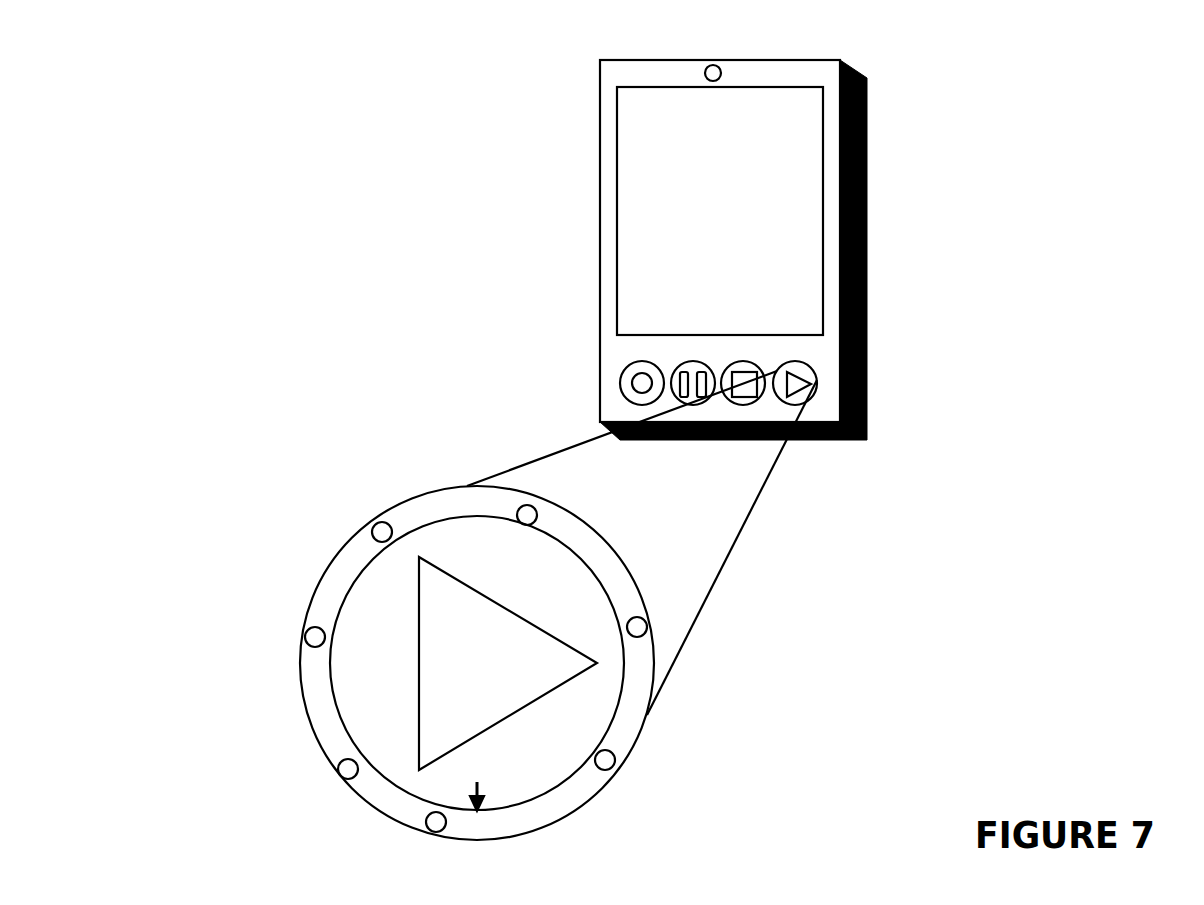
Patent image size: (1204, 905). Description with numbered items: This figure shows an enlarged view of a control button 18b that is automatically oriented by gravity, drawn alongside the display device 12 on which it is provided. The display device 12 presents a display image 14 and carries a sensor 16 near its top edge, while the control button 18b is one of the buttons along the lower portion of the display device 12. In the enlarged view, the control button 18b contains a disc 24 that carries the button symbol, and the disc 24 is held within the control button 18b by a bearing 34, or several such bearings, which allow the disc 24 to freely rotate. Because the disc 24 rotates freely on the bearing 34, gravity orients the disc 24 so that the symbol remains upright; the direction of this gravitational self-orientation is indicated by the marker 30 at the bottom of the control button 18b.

The display device 12 is at (600, 148).
The display image 14 is at (638, 270).
The sensor 16 is at (705, 72).
The control button 18b is at (818, 466).
The disc 24 is at (448, 638).
The orientation indicator arrow 30 is at (481, 790).
The bearing 34 is at (317, 637).